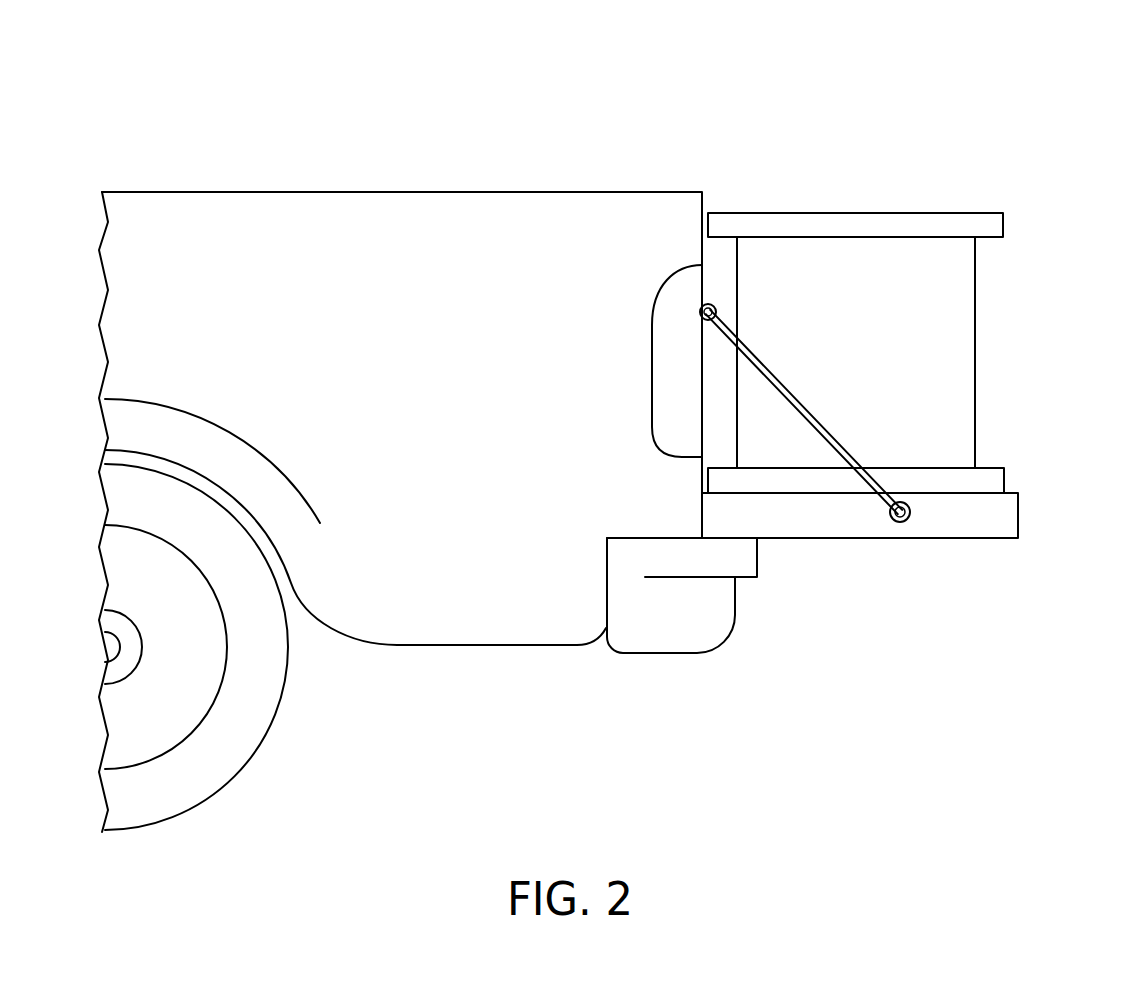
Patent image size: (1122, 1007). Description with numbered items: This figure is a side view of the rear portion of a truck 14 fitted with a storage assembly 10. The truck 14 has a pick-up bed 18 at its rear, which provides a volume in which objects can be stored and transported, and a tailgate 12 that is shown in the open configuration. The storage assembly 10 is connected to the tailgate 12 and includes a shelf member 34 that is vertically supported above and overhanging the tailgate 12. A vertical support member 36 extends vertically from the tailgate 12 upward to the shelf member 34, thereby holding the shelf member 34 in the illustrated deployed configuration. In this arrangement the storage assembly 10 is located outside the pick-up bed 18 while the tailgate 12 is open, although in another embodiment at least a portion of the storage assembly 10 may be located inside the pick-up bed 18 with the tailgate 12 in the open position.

The storage assembly 10 is at (873, 341).
The tailgate 12 is at (943, 529).
The truck 14 is at (428, 433).
The pick-up bed 18 is at (400, 449).
The shelf member 34 is at (953, 222).
The vertical support member 36 is at (970, 368).